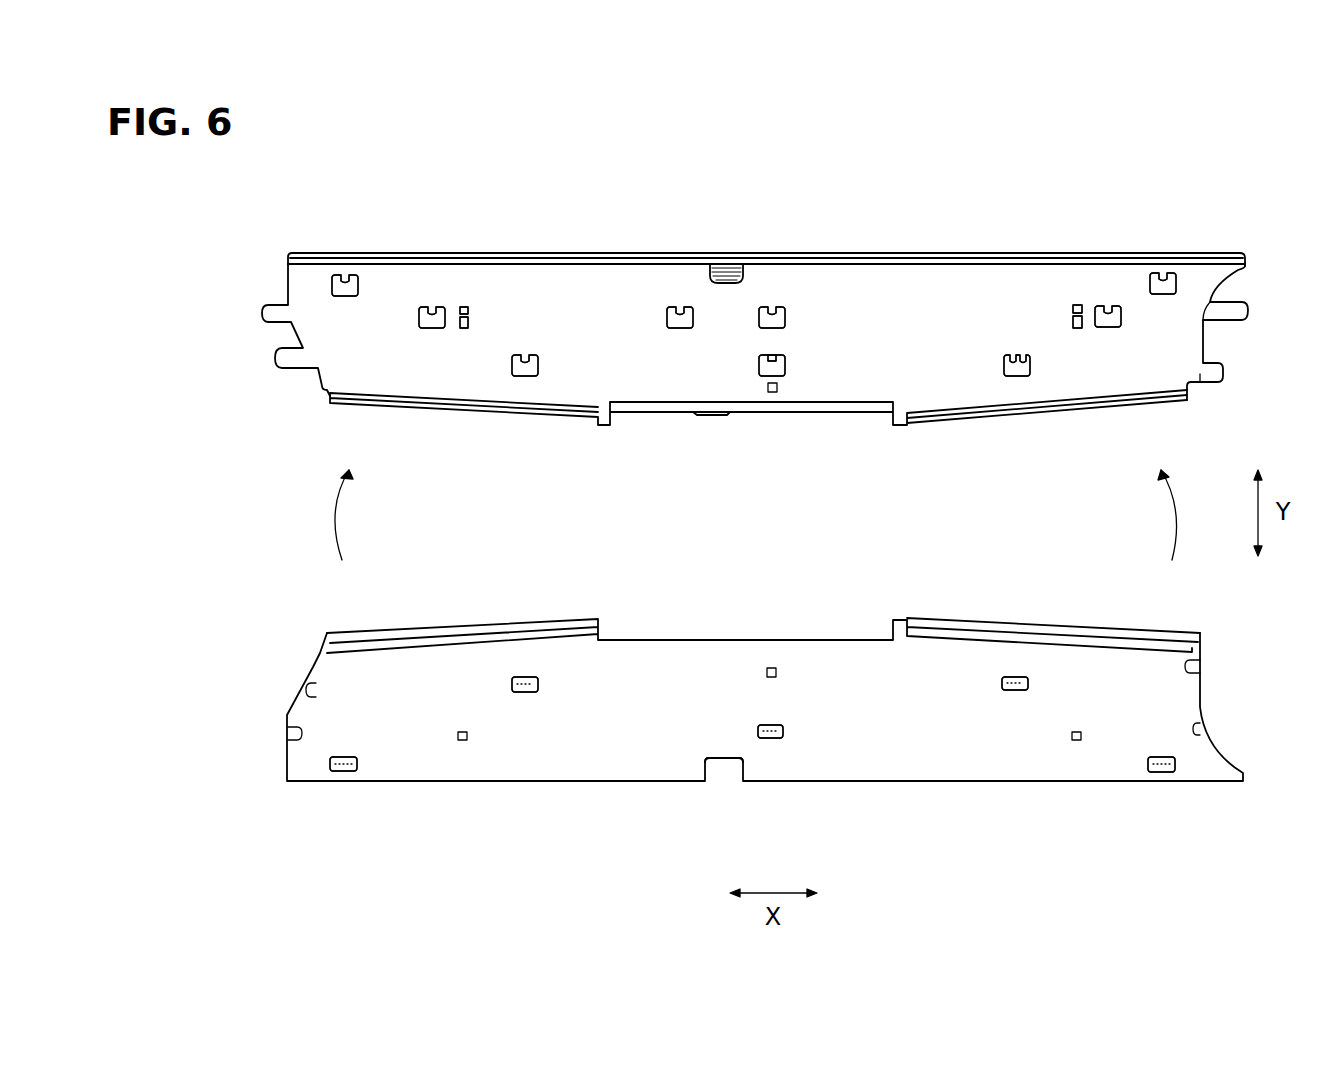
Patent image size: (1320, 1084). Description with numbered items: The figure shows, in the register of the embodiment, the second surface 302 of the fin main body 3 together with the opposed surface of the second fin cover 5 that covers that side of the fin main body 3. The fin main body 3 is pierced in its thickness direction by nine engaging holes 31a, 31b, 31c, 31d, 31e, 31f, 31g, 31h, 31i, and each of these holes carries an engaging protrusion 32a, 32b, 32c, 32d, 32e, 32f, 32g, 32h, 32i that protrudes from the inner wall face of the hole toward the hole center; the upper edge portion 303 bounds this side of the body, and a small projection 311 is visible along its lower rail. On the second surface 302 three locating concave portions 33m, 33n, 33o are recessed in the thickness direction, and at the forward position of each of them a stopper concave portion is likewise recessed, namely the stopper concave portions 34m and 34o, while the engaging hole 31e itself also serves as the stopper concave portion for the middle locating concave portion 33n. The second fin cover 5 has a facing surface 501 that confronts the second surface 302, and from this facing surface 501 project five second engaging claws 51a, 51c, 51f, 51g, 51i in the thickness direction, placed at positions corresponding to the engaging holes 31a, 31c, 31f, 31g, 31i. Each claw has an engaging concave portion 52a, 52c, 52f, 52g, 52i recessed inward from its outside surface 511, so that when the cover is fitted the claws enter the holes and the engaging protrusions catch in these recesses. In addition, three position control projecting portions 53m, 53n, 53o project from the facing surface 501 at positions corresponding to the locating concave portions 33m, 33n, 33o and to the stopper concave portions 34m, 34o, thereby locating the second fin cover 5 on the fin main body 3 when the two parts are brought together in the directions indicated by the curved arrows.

The fin main body 3 is at (272, 245).
The second fin cover 5 is at (320, 622).
The second surface 302 is at (312, 291).
The upper edge portion 303 is at (908, 252).
The projection 311 is at (692, 410).
The engaging hole 31a is at (330, 286).
The engaging hole 31b is at (419, 319).
The engaging hole 31c is at (522, 378).
The engaging hole 31d is at (676, 322).
The engaging hole 31e is at (785, 370).
The engaging hole 31f is at (786, 320).
The engaging hole 31g is at (1012, 377).
The engaging hole 31h is at (1115, 322).
The engaging hole 31i is at (1176, 286).
The engaging protrusion 32a is at (345, 275).
The engaging protrusion 32b is at (432, 307).
The engaging protrusion 32c is at (525, 355).
The engaging protrusion 32d is at (680, 307).
The engaging protrusion 32e is at (768, 365).
The engaging protrusion 32f is at (772, 307).
The engaging protrusion 32g is at (1020, 377).
The engaging protrusion 32h is at (1108, 306).
The engaging protrusion 32i is at (1165, 273).
The locating concave portion 33m is at (463, 330).
The locating concave portion 33n is at (772, 393).
The locating concave portion 33o is at (1075, 310).
The stopper concave portion 34m is at (467, 308).
The stopper concave portion 34o is at (1078, 305).
The facing surface 501 is at (340, 678).
The outside surface 511 is at (722, 768).
The second engaging claw 51a is at (329, 764).
The second engaging claw 51c is at (539, 686).
The second engaging claw 51f is at (784, 732).
The second engaging claw 51g is at (1002, 684).
The second engaging claw 51i is at (1176, 765).
The engaging concave portion 52a is at (343, 771).
The engaging concave portion 52c is at (524, 692).
The engaging concave portion 52f is at (770, 738).
The engaging concave portion 52g is at (1015, 690).
The engaging concave portion 52i is at (1160, 772).
The position control projecting portion 53m is at (462, 741).
The position control projecting portion 53n is at (770, 668).
The position control projecting portion 53o is at (1076, 741).